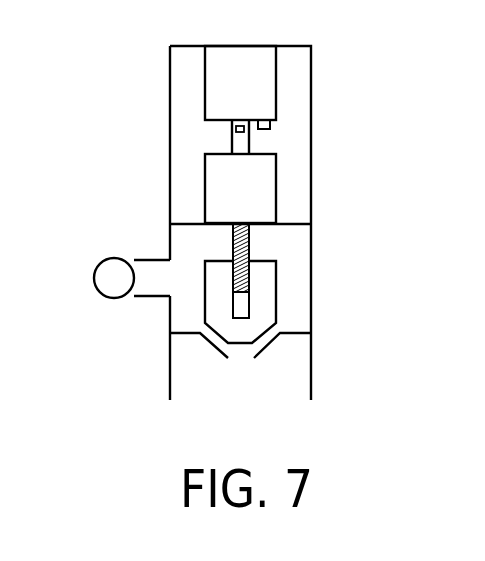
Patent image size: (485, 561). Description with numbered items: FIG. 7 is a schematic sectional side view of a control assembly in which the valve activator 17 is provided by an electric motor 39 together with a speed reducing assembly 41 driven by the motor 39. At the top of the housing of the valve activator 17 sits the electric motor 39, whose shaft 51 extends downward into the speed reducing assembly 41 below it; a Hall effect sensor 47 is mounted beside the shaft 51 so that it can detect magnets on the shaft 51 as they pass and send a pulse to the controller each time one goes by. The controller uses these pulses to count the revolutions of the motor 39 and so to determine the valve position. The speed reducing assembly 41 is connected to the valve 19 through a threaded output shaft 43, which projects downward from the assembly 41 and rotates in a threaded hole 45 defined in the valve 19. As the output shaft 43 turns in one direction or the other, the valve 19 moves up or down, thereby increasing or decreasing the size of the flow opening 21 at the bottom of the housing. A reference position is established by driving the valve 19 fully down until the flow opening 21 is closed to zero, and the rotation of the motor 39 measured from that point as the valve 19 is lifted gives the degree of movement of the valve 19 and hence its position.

The valve activator 17 is at (149, 142).
The electric motor 39 is at (276, 72).
The shaft 51 is at (238, 142).
The Hall effect sensor 47 is at (265, 130).
The speed reducing assembly 41 is at (276, 186).
The threaded output shaft 43 is at (249, 248).
The threaded hole 45 is at (233, 301).
The valve 19 is at (276, 307).
The flow opening 21 is at (243, 350).